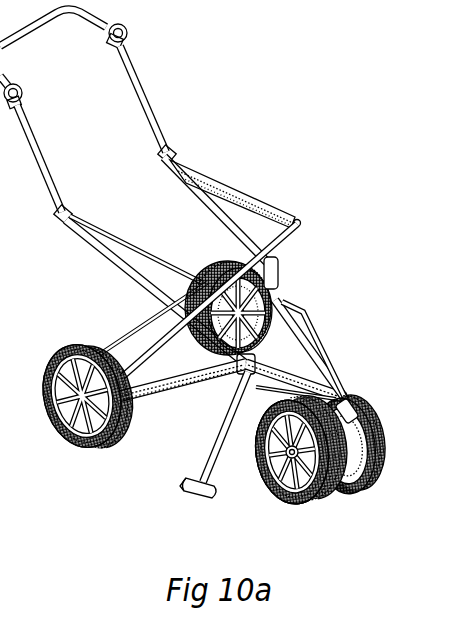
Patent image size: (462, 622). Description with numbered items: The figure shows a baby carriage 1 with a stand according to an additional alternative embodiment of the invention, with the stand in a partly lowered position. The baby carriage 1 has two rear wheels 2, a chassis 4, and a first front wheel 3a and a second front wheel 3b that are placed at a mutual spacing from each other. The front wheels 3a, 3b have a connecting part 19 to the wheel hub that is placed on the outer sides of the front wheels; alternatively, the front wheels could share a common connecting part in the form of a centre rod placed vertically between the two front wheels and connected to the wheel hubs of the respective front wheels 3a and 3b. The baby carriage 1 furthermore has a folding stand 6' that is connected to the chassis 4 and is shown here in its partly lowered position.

The baby carriage 1 is at (268, 158).
The rear wheels 2 is at (206, 262).
The first front wheel 3a is at (328, 494).
The second front wheel 3b is at (360, 484).
The chassis 4 is at (318, 357).
The folding stand 6' is at (214, 450).
The connecting part 19 is at (287, 466).